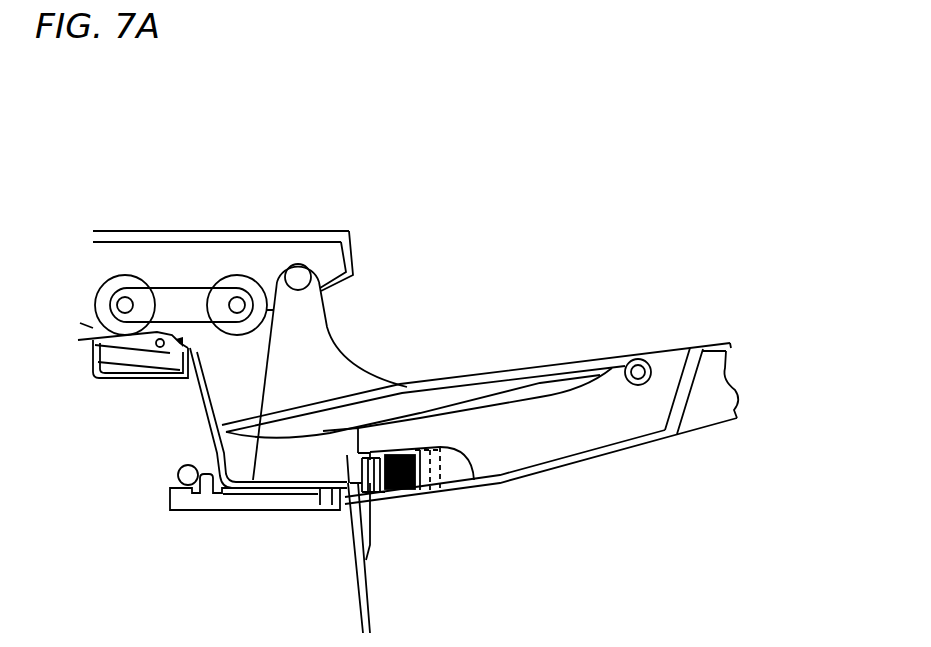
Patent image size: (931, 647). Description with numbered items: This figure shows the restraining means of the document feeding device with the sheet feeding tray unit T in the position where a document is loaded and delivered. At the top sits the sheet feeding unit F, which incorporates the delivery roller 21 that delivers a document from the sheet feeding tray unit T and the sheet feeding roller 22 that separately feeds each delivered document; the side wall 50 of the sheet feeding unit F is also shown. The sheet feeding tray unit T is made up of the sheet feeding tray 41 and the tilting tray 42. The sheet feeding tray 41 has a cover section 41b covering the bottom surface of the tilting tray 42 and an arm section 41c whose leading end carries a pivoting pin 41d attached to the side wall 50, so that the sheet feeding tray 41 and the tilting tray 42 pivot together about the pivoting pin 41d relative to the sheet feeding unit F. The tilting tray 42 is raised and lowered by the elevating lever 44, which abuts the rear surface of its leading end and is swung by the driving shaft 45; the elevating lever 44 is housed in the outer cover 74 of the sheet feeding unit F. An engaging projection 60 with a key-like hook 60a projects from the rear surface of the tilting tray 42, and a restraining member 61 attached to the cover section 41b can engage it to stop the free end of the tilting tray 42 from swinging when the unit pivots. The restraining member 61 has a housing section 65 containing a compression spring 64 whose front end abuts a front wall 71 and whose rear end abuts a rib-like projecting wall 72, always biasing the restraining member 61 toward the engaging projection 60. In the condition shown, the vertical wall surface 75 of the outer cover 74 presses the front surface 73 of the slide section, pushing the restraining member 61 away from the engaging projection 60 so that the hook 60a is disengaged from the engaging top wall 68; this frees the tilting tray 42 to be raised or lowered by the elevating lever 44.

The sheet feeding unit F is at (180, 213).
The sheet feeding tray unit T is at (537, 243).
The delivery roller 21 is at (238, 275).
The sheet feeding roller 22 is at (123, 275).
The sheet feeding tray 41 is at (706, 340).
The cover section 41b is at (593, 460).
The arm section 41c is at (328, 337).
The pivoting pin 41d is at (298, 264).
The tilting tray 42 is at (516, 367).
The elevating lever 44 is at (230, 502).
The driving shaft 45 is at (178, 470).
The side wall 50 is at (352, 243).
The engaging projection 60 is at (350, 443).
The hook 60a is at (366, 560).
The restraining member 61 is at (428, 436).
The compression spring 64 is at (417, 490).
The housing section 65 is at (427, 490).
The engaging top wall 68 is at (378, 493).
The front wall 71 is at (398, 453).
The projecting wall 72 is at (467, 458).
The front surface 73 is at (340, 500).
The outer cover 74 is at (207, 395).
The vertical wall surface 75 is at (373, 612).